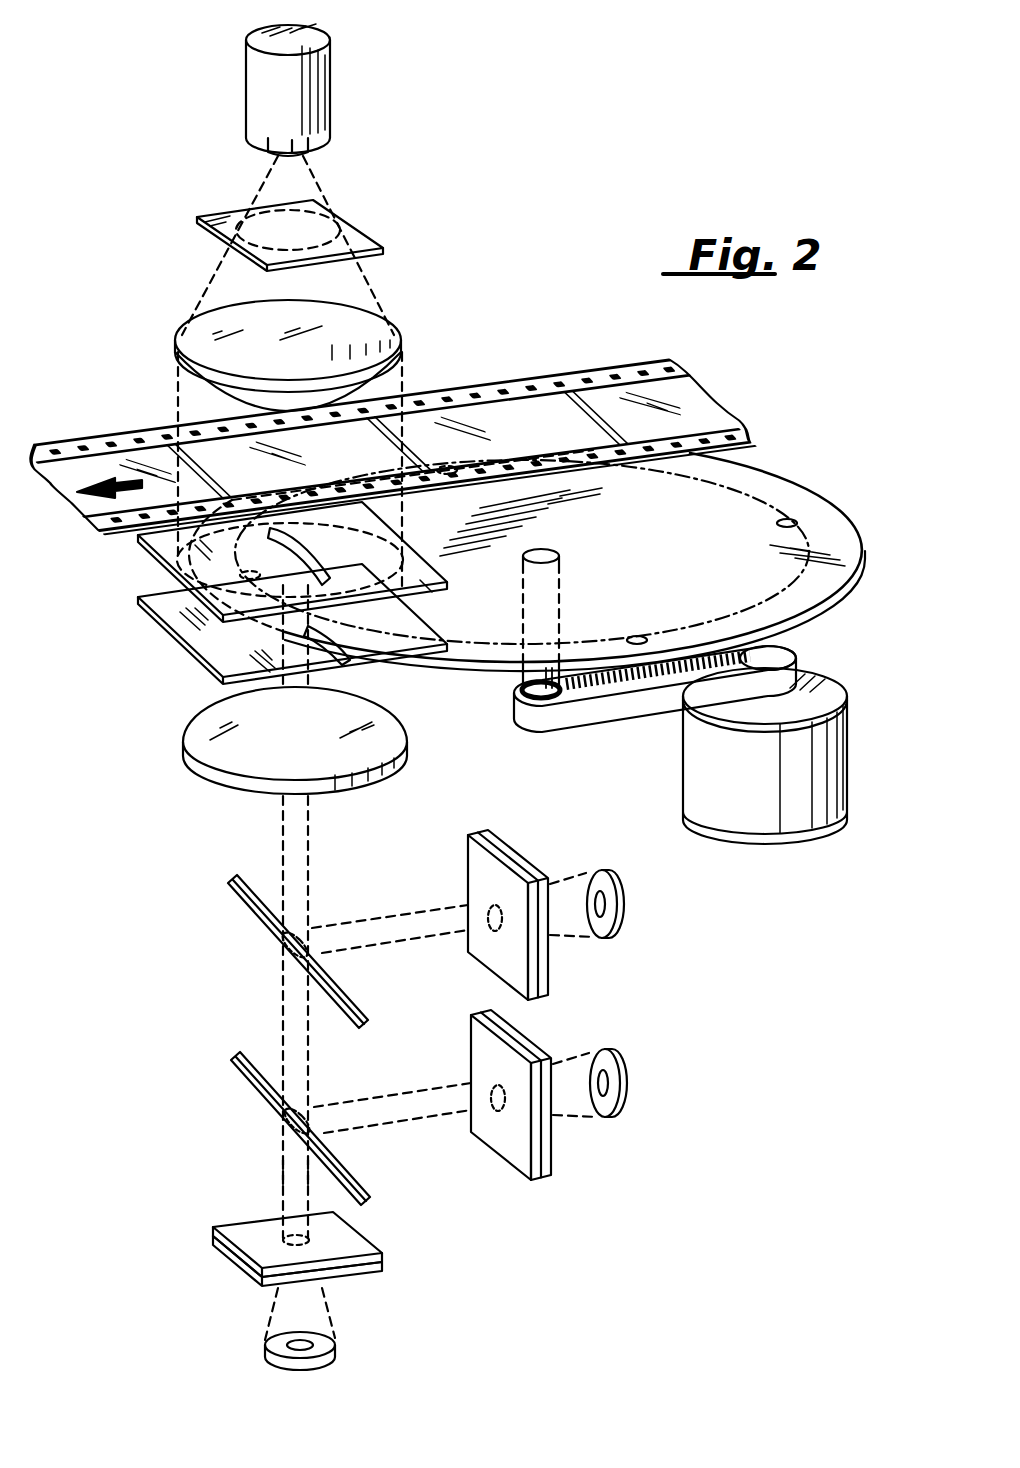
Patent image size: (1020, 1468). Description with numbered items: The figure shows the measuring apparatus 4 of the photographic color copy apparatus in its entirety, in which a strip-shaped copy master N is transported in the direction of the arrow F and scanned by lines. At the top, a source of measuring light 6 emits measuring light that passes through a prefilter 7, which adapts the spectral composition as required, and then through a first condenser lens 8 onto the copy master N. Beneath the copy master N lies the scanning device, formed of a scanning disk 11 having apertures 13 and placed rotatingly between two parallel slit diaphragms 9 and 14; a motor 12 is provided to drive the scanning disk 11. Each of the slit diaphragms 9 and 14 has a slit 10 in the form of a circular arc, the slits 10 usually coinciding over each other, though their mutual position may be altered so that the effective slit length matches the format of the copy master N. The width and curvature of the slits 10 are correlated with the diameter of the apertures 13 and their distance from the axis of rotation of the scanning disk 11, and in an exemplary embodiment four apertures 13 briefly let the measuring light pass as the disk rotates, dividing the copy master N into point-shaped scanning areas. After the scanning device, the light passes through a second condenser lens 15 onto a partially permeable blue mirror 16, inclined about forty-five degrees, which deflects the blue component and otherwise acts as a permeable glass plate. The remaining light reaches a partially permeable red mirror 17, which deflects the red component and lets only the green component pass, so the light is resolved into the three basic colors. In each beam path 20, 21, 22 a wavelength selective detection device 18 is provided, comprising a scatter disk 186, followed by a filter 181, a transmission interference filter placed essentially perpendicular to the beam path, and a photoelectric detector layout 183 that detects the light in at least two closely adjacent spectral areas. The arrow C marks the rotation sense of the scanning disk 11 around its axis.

The measuring apparatus 4 is at (524, 360).
The source of measuring light 6 is at (318, 100).
The prefilter 7 is at (370, 240).
The first condenser lens 8 is at (382, 333).
The slit diaphragm 9 is at (160, 545).
The slit 10 is at (296, 542).
The scanning disk 11 is at (752, 490).
The motor 12 is at (788, 820).
The apertures 13 is at (447, 468).
The slit diaphragm 14 is at (160, 604).
The second condenser lens 15 is at (182, 744).
The partially permeable blue mirror 16 is at (266, 916).
The partially permeable red mirror 17 is at (266, 1095).
The wavelength selective detection device 18 is at (461, 1098).
The beam path 20 is at (374, 920).
The beam path 21 is at (384, 1105).
The beam path 22 is at (296, 1174).
The filter 181 is at (541, 968).
The photoelectric detector layout 183 is at (620, 901).
The scatter disk 186 is at (506, 960).
The copy master N is at (432, 422).
The arrow indicating direction of transport F is at (128, 480).
The disc rotation direction C is at (740, 618).